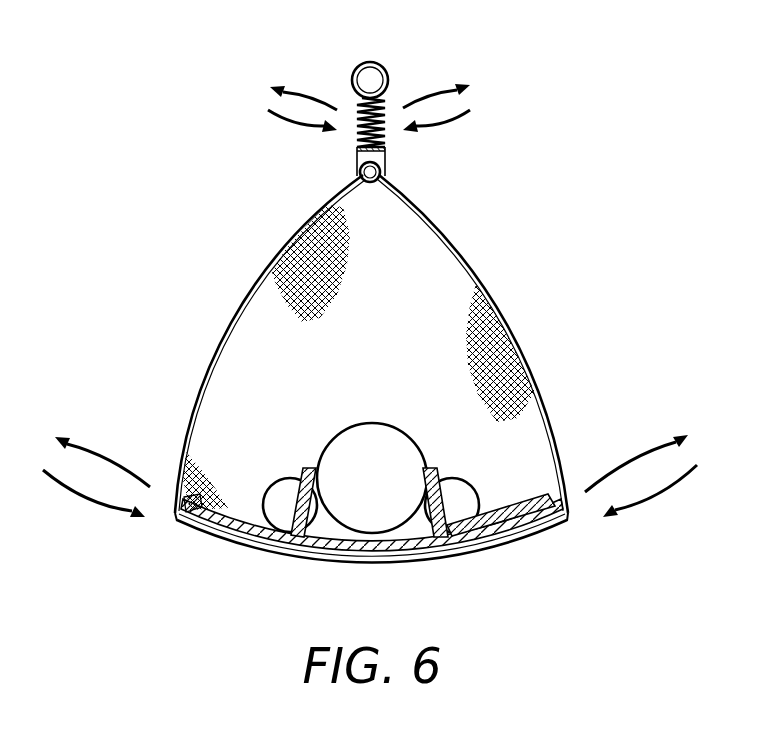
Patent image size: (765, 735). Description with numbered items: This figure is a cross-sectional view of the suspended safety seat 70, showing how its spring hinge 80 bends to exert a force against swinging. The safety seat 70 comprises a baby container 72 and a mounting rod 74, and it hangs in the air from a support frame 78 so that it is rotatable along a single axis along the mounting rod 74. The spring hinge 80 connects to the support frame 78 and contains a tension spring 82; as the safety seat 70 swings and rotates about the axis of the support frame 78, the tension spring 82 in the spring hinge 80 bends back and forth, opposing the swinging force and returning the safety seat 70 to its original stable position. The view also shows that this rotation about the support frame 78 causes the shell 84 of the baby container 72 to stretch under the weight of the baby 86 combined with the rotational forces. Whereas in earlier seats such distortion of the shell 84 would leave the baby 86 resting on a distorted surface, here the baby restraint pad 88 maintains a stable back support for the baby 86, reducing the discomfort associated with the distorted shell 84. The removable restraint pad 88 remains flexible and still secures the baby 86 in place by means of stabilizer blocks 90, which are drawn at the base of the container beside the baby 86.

The safety seat 70 is at (402, 385).
The baby container 72 is at (537, 380).
The mounting rod 74 is at (362, 170).
The support frame 78 is at (383, 73).
The spring hinge 80 is at (357, 92).
The tension spring 82 is at (383, 137).
The shell 84 is at (502, 550).
The baby 86 is at (355, 432).
The baby restraint pad 88 is at (540, 500).
The stabilizer blocks 90 is at (312, 485).